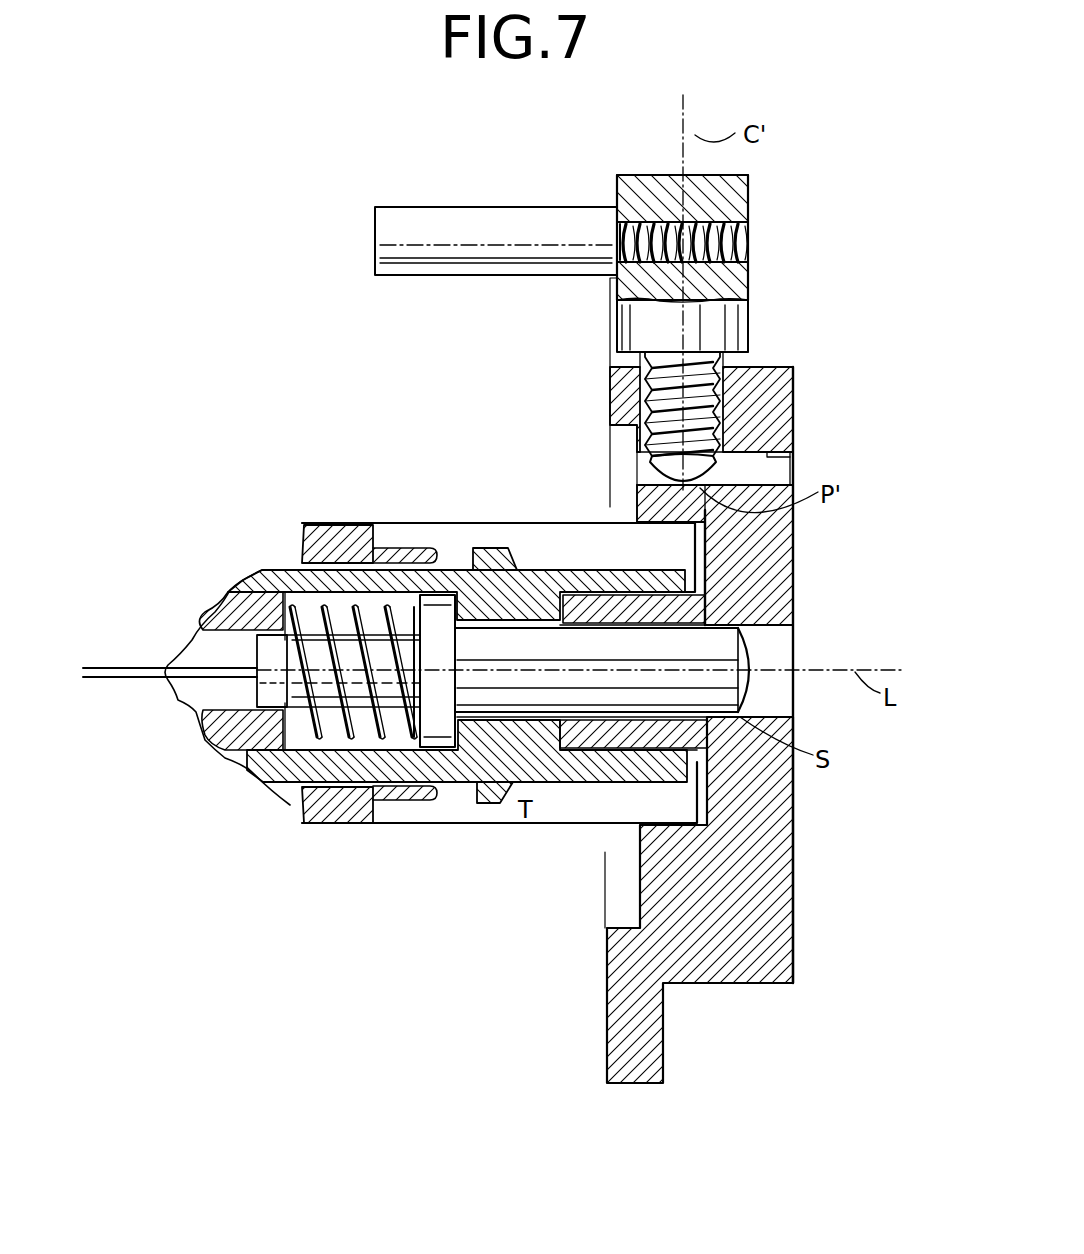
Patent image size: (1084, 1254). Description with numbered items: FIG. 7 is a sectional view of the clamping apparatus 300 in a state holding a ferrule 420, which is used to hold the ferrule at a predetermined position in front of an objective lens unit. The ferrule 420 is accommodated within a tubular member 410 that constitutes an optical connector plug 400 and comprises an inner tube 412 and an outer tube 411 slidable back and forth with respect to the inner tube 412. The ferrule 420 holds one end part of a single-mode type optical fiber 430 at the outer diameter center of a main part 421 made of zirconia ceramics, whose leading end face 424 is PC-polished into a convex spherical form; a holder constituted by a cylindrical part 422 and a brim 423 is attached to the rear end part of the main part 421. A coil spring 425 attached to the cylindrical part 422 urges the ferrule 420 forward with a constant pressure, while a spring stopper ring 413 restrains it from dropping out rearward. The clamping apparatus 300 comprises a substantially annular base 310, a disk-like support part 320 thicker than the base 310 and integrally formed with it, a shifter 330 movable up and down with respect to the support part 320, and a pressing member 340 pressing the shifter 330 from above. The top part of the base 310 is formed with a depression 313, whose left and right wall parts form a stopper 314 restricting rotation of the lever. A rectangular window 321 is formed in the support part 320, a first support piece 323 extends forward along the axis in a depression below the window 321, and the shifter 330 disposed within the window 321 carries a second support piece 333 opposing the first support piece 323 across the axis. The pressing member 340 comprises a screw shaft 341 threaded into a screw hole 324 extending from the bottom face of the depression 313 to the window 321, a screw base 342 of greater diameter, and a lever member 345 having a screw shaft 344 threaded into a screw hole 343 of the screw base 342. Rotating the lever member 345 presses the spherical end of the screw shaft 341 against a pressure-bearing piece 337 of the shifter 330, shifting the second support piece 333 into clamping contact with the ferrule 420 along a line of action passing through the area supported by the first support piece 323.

The clamping apparatus 300 is at (843, 376).
The base 310 is at (606, 1011).
The depression 313 is at (618, 357).
The stopper 314 is at (617, 305).
The support part 320 is at (639, 882).
The rectangular window 321 is at (790, 460).
The first support piece 323 is at (552, 723).
The screw hole 324 is at (735, 356).
The shifter 330 is at (795, 550).
The second support piece 333 is at (597, 595).
The pressure-bearing piece 337 is at (635, 495).
The pressing member 340 is at (558, 200).
The screw shaft 341 is at (640, 405).
The screw base 342 is at (750, 182).
The screw hole 343 is at (748, 240).
The screw shaft 344 is at (625, 228).
The lever member 345 is at (432, 225).
The optical connector plug 400 is at (268, 515).
The tubular member 410 is at (334, 522).
The outer tube 411 is at (365, 560).
The inner tube 412 is at (452, 568).
The spring stopper ring 413 is at (240, 607).
The ferrule 420 is at (519, 695).
The main part 421 is at (723, 697).
The cylindrical part 422 is at (257, 692).
The brim 423 is at (437, 727).
The leading end face 424 is at (755, 648).
The coil spring 425 is at (300, 735).
The single-mode type optical fiber 430 is at (148, 680).